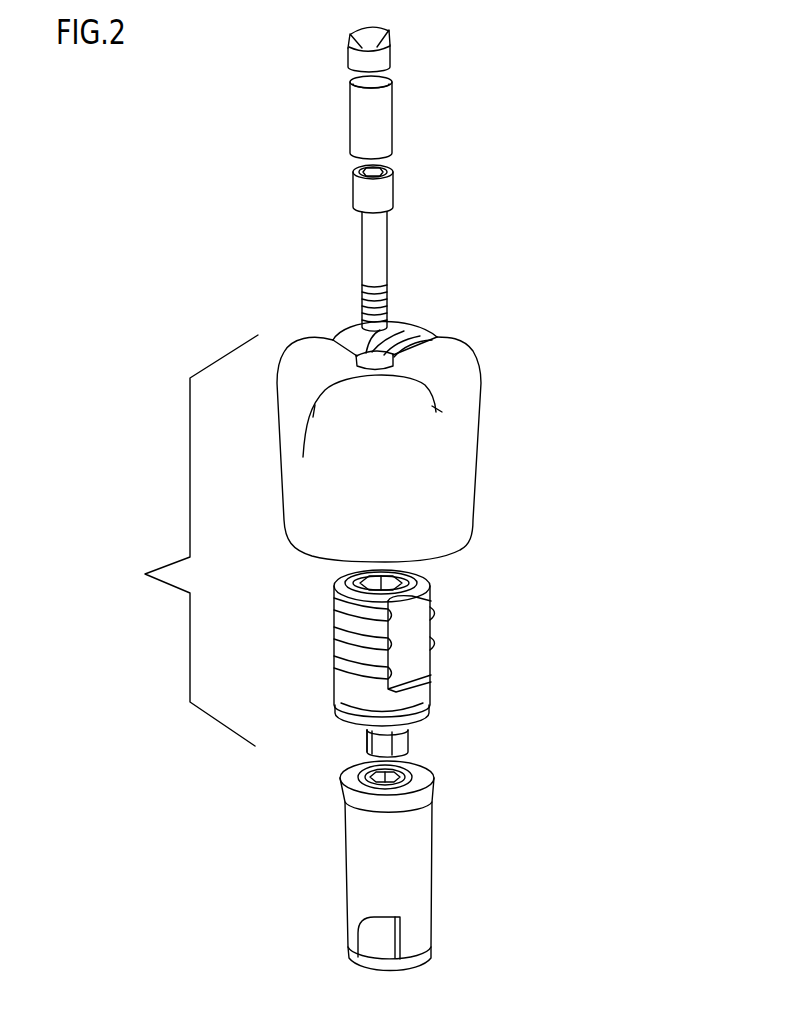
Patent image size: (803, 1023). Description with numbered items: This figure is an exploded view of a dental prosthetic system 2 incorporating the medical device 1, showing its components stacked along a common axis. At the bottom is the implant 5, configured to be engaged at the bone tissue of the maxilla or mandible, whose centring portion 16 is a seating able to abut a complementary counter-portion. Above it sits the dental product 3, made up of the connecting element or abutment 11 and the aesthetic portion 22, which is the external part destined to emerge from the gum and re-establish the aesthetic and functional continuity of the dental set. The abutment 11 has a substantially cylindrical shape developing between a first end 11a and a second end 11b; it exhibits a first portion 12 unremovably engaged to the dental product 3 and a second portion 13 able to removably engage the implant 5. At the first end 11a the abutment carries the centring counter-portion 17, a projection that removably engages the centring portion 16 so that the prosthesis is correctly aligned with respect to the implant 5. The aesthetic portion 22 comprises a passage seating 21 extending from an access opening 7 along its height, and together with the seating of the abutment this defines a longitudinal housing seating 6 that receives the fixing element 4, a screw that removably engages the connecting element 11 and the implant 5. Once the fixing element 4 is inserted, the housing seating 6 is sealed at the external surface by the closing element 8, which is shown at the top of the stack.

The medical device 1 is at (398, 110).
The dental prosthetic system 2 is at (617, 121).
The dental product 3 is at (192, 540).
The fixing element 4 is at (394, 249).
The implant 5 is at (440, 859).
The longitudinal housing seating 6 is at (356, 351).
The access opening 7 is at (402, 341).
The closing element 8 is at (349, 56).
The connecting element or abutment 11 is at (446, 641).
The first end 11a is at (431, 717).
The second end 11b is at (429, 578).
The first portion 12 is at (326, 634).
The second portion 13 is at (419, 746).
The centring portion 16 is at (360, 778).
The centring counter-portion 17 is at (366, 742).
The passage seating 21 is at (384, 346).
The aesthetic portion 22 is at (448, 467).